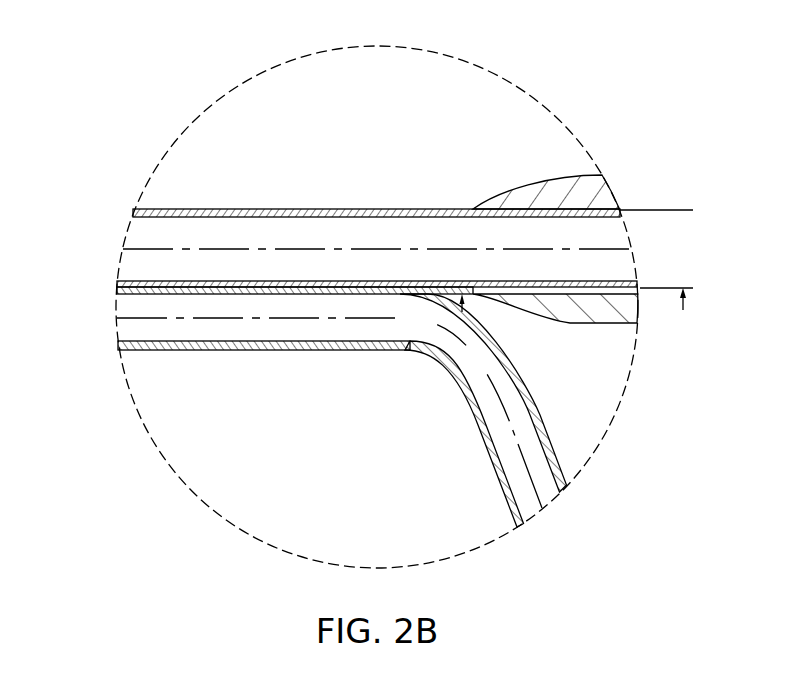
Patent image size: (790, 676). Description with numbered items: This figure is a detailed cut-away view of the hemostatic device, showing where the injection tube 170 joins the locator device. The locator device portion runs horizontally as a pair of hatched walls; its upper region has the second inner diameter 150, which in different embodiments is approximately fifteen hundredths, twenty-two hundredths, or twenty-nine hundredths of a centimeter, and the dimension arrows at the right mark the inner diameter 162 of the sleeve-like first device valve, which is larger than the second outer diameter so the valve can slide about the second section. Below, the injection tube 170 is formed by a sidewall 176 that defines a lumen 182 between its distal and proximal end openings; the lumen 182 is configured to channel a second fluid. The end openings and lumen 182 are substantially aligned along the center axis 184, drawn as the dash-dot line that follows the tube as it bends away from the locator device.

The second inner diameter 150 is at (462, 205).
The inner diameter 162 is at (683, 205).
The injection tube 170 is at (314, 407).
The sidewall 176 is at (116, 289).
The lumen 182 is at (245, 327).
The center axis 184 is at (510, 423).